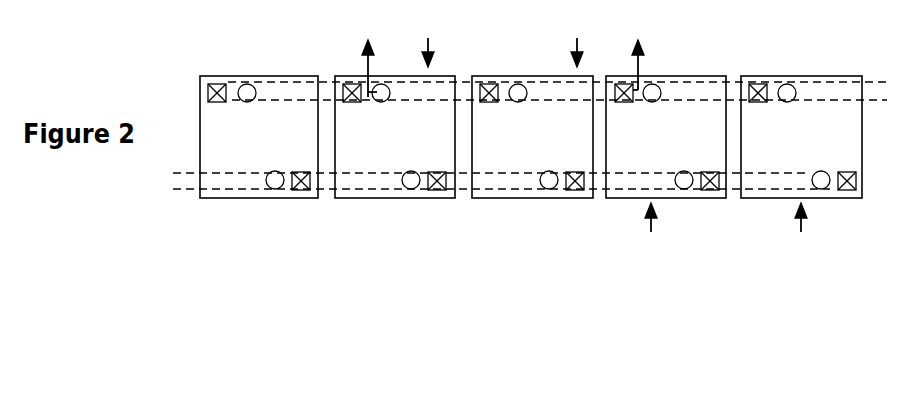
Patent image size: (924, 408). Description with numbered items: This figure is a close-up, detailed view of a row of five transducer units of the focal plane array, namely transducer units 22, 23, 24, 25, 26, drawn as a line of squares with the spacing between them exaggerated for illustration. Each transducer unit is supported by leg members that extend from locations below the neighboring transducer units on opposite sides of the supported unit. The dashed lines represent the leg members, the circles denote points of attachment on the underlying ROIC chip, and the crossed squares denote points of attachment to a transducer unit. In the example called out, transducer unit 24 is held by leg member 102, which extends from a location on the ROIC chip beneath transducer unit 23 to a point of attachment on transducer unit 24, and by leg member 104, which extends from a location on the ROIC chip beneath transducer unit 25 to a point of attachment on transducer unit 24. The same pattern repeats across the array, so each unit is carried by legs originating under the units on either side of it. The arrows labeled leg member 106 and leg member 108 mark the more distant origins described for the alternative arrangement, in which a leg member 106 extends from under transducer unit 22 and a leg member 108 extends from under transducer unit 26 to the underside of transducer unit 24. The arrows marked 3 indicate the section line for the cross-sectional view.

The transducer unit 22 is at (245, 150).
The transducer unit 23 is at (381, 150).
The transducer unit 24 is at (518, 150).
The transducer unit 25 is at (652, 150).
The transducer unit 26 is at (785, 150).
The leg member 102 is at (428, 36).
The leg member 104 is at (651, 233).
The leg member 106 is at (577, 34).
The leg member 108 is at (801, 233).
The section line for FIG. 3 is at (505, 62).